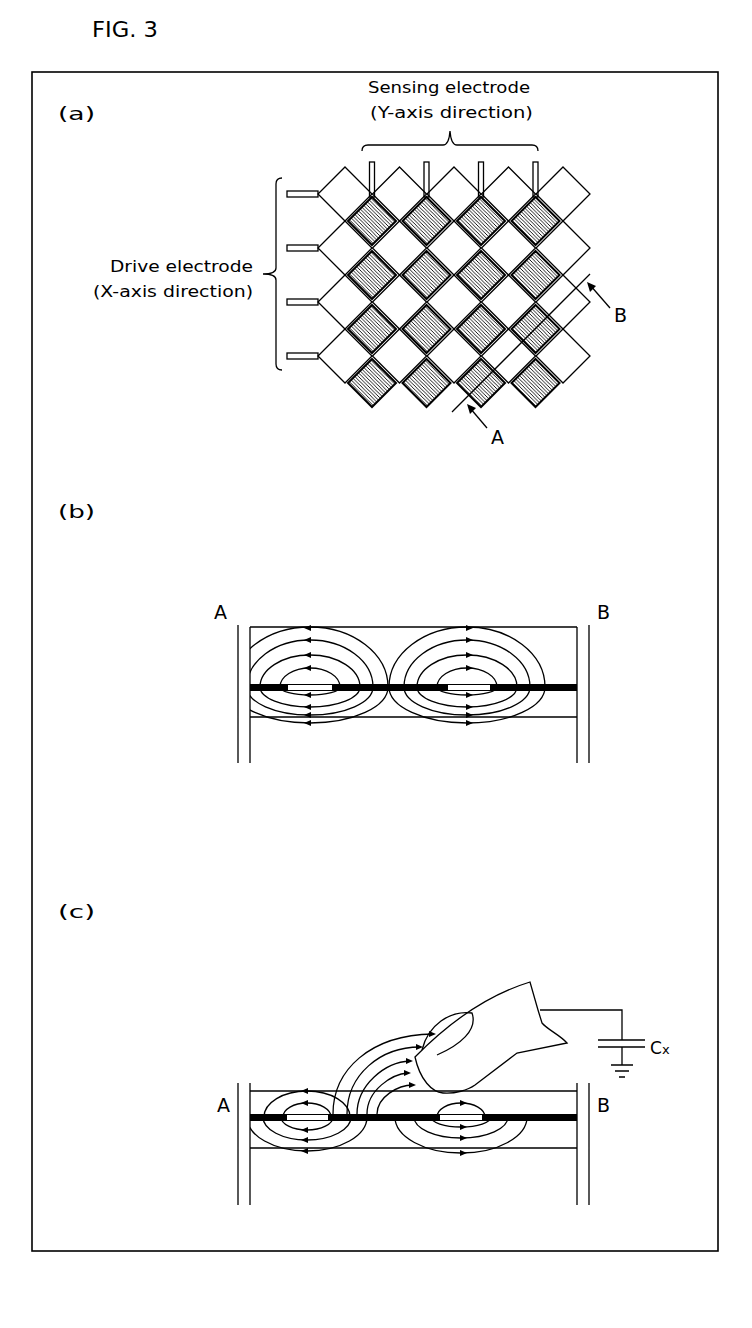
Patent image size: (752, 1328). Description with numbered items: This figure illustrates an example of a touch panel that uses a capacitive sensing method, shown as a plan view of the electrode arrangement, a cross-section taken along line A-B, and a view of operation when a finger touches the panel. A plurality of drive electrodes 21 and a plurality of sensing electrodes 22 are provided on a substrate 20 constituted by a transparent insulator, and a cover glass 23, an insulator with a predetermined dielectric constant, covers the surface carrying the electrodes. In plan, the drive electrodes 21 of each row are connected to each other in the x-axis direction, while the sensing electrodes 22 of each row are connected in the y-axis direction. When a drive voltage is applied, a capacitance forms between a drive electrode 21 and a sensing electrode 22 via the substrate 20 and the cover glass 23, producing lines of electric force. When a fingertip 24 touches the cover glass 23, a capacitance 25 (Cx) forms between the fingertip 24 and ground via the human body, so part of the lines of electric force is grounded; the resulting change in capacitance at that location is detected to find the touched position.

The substrate 20 is at (552, 720).
The drive electrode 21 is at (568, 308).
The sensing electrode 22 is at (542, 337).
The cover glass 23 is at (260, 627).
The fingertip 24 is at (500, 1002).
The capacitance 25 is at (633, 1040).